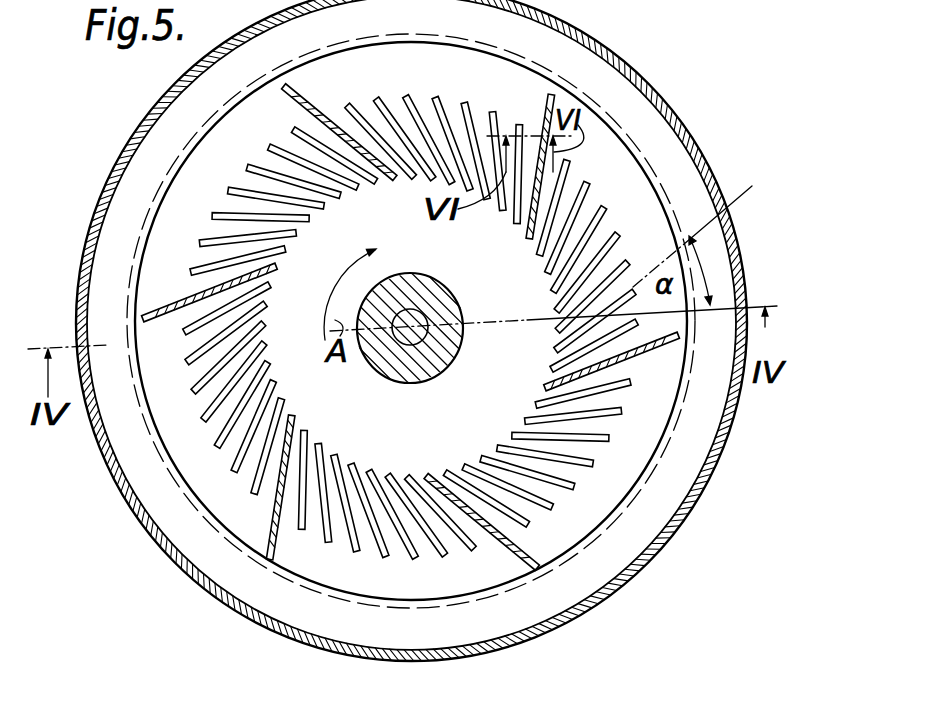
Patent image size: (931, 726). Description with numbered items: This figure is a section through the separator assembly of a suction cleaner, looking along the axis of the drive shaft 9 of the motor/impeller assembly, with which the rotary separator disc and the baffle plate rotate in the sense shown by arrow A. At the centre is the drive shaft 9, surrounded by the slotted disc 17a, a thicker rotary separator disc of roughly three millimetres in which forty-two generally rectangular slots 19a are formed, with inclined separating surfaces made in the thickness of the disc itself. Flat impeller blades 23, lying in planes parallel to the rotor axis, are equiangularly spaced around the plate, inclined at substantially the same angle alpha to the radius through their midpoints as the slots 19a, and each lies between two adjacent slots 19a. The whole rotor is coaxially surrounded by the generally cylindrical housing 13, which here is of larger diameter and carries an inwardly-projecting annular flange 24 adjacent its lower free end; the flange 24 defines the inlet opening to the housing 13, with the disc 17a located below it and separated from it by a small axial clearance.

The drive shaft 9 is at (418, 321).
The housing 13 is at (182, 571).
The slotted disc 17a is at (247, 553).
The slots 19a is at (602, 210).
The impeller blades 23 is at (276, 270).
The annular flange 24 is at (603, 522).